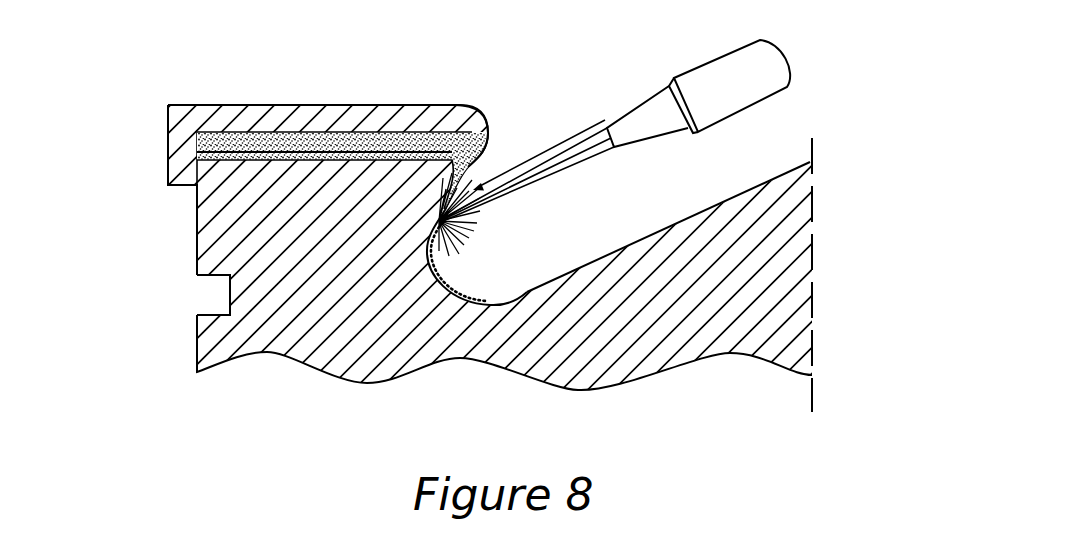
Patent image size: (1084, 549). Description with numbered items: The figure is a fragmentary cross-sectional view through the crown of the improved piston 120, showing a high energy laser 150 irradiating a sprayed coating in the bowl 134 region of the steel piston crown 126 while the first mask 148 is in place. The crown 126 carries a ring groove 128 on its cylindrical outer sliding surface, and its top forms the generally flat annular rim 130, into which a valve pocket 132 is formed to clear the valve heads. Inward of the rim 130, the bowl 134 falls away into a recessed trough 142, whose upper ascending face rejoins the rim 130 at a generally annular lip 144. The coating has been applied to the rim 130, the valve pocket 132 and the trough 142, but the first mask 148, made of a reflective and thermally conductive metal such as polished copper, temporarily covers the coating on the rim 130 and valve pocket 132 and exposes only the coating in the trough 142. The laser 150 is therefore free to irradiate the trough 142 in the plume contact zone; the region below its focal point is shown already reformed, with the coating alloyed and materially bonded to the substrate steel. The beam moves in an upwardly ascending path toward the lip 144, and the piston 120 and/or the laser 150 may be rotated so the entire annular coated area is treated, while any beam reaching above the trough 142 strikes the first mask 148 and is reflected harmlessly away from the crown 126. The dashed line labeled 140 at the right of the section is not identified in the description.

The piston 120 is at (115, 194).
The piston crown 126 is at (188, 222).
The ring groove 128 is at (210, 314).
The rim 130 is at (249, 132).
The valve pocket 132 is at (317, 152).
The bowl 134 is at (592, 210).
The centerline 140 is at (795, 165).
The trough 142 is at (442, 277).
The lip 144 is at (484, 171).
The first mask 148 is at (404, 106).
The high energy laser 150 is at (719, 57).